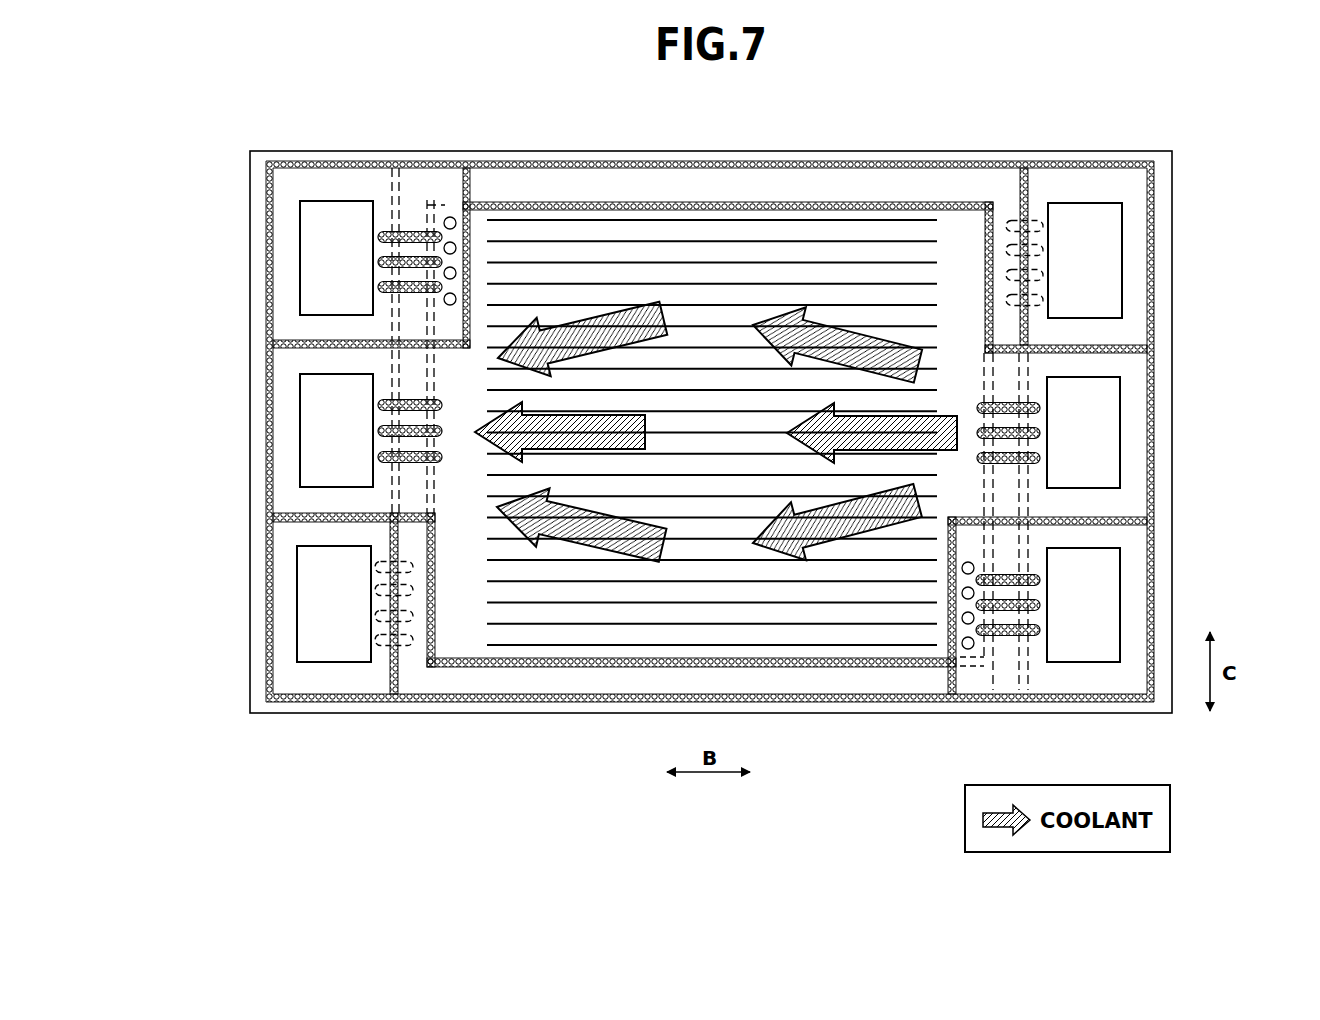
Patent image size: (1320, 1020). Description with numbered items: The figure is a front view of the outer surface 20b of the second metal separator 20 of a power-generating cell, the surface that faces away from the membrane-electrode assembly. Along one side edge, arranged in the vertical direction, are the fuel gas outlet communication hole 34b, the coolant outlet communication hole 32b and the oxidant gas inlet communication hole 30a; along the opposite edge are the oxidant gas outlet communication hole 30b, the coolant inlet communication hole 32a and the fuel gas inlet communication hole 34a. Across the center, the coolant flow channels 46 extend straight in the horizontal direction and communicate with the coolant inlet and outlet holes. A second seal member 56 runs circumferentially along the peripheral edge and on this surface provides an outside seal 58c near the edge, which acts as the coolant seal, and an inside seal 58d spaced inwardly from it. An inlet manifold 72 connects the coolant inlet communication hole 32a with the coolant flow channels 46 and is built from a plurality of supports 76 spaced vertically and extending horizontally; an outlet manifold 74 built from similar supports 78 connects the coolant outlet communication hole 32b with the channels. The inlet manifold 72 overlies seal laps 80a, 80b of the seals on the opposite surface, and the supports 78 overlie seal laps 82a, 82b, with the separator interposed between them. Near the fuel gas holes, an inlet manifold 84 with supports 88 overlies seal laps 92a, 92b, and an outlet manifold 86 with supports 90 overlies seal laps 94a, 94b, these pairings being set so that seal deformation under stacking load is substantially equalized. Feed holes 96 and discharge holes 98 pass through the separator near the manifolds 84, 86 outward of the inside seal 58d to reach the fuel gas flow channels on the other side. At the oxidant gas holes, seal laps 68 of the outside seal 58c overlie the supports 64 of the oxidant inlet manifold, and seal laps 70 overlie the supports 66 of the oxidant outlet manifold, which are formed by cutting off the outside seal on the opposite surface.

The second metal separator 20 is at (1082, 108).
The outer surface 20b is at (765, 190).
The second seal member 56 is at (1088, 149).
The outside seal 58c is at (830, 170).
The inside seal 58d is at (942, 203).
The supports 66 is at (1017, 215).
The seal laps 70 is at (1030, 240).
The oxidant gas outlet communication hole 30b is at (1095, 262).
The seal lap 80b is at (1000, 380).
The seal lap 80a is at (1025, 395).
The supports 76 is at (1010, 400).
The coolant inlet communication hole 32a is at (1095, 435).
The inlet manifold 72 is at (1006, 468).
The seal lap 92b is at (993, 560).
The seal lap 92a is at (1012, 565).
The supports 88 is at (1000, 587).
The fuel gas inlet communication hole 34a is at (1095, 605).
The fuel gas outlet communication hole 34b is at (330, 248).
The supports 90 is at (410, 296).
The seal lap 94a is at (403, 305).
The seal lap 94b is at (428, 315).
The outlet manifold 74 is at (414, 399).
The coolant outlet communication hole 32b is at (330, 432).
The supports 78 is at (410, 478).
The seal lap 82a is at (403, 482).
The seal lap 82b is at (428, 490).
The oxidant gas inlet communication hole 30a is at (330, 600).
The supports 64 is at (413, 645).
The seal laps 68 is at (400, 600).
The coolant flow channels 46 is at (642, 613).
The feed holes 96 is at (968, 643).
The inlet manifold 84 is at (1004, 644).
The outlet manifold 86 is at (421, 222).
The discharge holes 98 is at (457, 224).